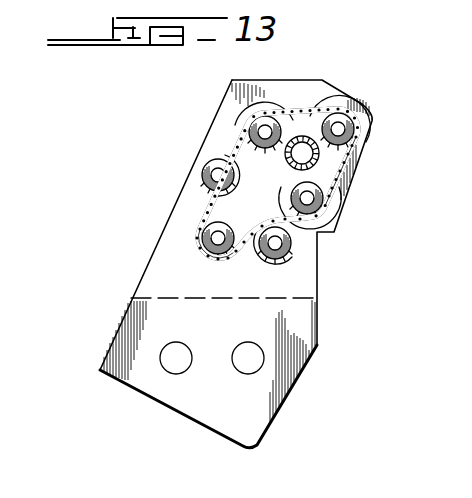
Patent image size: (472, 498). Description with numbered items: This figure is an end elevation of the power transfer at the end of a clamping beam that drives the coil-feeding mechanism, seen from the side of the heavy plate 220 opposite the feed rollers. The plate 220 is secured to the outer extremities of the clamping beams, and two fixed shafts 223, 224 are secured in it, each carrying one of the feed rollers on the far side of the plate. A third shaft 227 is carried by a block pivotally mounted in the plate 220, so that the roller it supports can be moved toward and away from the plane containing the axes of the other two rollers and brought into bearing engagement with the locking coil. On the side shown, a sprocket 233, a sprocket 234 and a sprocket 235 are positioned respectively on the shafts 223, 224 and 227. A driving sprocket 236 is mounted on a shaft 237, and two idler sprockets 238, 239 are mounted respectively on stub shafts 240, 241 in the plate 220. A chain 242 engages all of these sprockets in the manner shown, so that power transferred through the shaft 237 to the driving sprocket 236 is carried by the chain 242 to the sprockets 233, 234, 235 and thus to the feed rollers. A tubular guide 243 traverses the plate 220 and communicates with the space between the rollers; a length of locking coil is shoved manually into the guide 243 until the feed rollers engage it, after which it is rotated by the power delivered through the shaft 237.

The plate 220 is at (303, 330).
The fixed shaft 223 is at (333, 219).
The fixed shaft 224 is at (342, 127).
The shaft 227 is at (258, 132).
The sprocket 233 is at (330, 193).
The sprocket 234 is at (352, 134).
The sprocket 235 is at (243, 124).
The driving sprocket 236 is at (210, 226).
The shaft 237 is at (204, 258).
The idler sprocket 238 is at (203, 163).
The idler sprocket 239 is at (283, 253).
The stub shaft 240 is at (211, 178).
The stub shaft 241 is at (277, 243).
The chain 242 is at (200, 237).
The tubular guide 243 is at (338, 173).